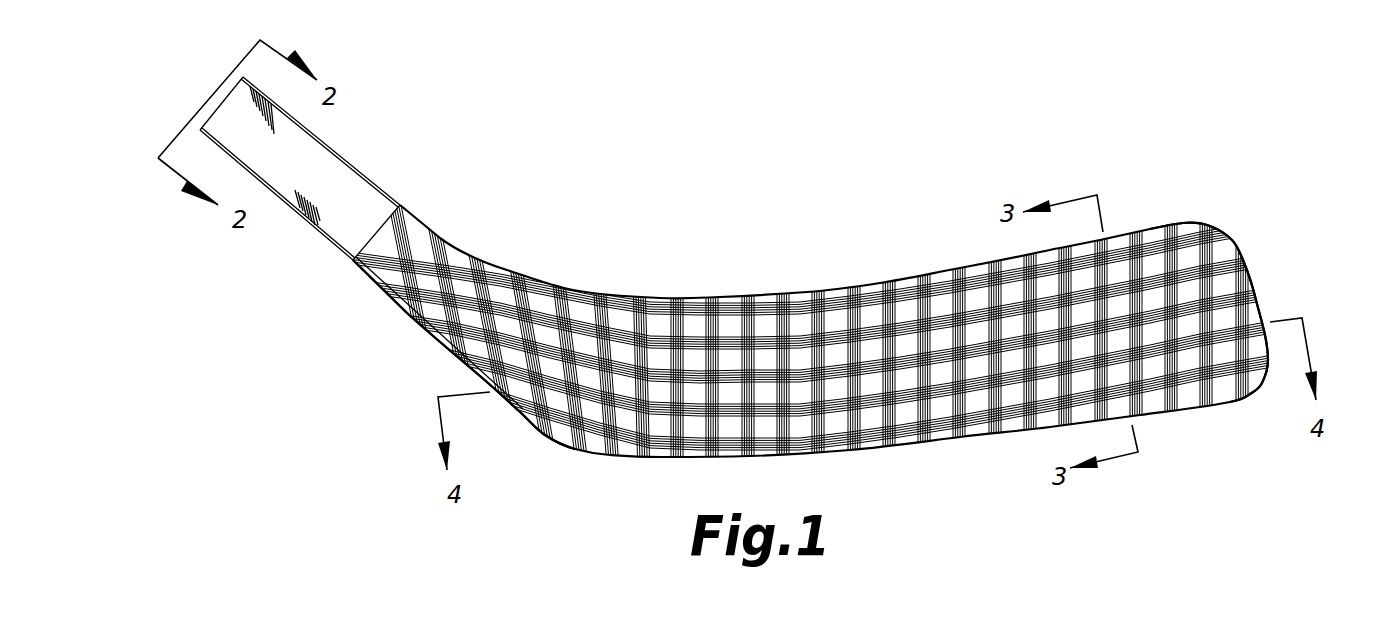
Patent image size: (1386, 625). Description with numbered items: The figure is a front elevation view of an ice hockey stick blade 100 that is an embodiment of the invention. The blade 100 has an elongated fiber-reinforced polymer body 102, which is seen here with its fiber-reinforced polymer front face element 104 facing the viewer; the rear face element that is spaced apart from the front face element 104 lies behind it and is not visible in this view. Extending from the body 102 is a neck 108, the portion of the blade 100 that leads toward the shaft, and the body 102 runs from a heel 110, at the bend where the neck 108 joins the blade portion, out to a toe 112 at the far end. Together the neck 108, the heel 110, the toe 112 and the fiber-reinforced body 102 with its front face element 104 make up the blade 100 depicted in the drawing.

The ice hockey stick blade 100 is at (793, 305).
The elongated fiber-reinforced polymer body 102 is at (868, 363).
The fiber-reinforced polymer front face element 104 is at (978, 368).
The neck 108 is at (276, 260).
The heel 110 is at (550, 490).
The toe 112 is at (1300, 244).